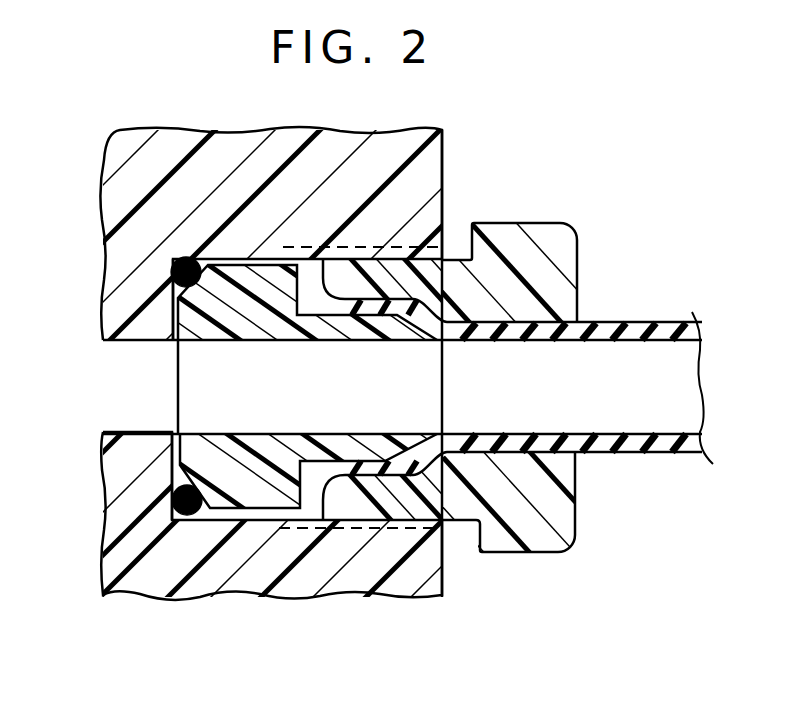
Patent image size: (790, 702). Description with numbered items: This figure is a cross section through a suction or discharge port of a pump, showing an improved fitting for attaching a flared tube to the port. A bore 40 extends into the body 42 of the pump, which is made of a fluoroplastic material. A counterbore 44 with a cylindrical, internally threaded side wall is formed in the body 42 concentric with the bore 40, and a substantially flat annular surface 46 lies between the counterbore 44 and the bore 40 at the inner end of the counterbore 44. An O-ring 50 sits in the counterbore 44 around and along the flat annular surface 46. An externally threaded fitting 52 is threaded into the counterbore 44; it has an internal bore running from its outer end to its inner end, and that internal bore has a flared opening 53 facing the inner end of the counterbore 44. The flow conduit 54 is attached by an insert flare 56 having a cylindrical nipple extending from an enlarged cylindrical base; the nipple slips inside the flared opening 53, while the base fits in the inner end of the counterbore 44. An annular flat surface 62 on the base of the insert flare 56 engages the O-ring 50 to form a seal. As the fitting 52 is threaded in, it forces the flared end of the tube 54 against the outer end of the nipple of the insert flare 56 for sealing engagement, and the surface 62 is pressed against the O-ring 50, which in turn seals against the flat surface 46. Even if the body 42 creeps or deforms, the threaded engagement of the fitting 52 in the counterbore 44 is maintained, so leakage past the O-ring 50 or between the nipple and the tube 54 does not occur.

The bore 40 is at (143, 340).
The body 42 is at (163, 215).
The counterbore 44 is at (233, 257).
The flat annular surface 46 is at (168, 319).
The O-ring 50 is at (176, 274).
The fitting 52 is at (497, 288).
The flared opening 53 is at (440, 310).
The flow conduit 54 is at (642, 326).
The insert flare 56 is at (262, 600).
The annular flat surface 62 is at (192, 259).